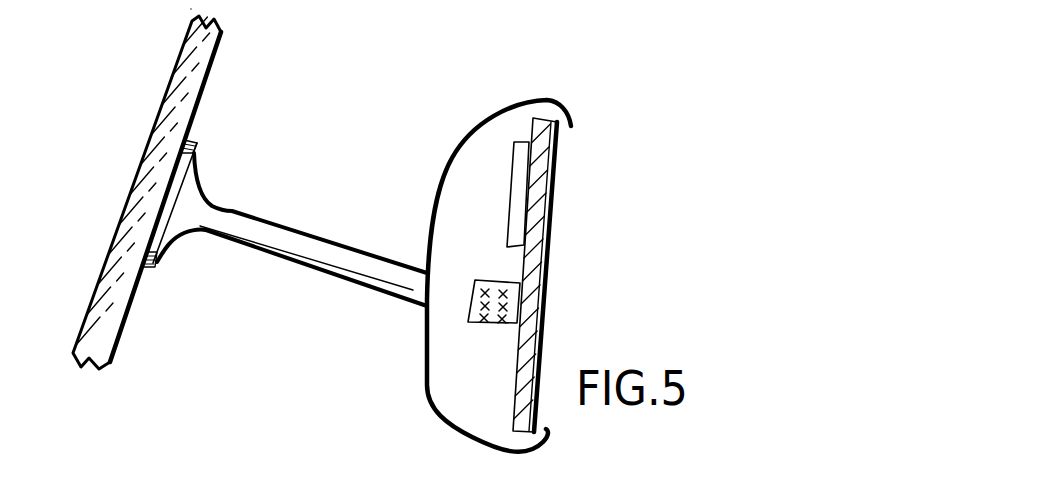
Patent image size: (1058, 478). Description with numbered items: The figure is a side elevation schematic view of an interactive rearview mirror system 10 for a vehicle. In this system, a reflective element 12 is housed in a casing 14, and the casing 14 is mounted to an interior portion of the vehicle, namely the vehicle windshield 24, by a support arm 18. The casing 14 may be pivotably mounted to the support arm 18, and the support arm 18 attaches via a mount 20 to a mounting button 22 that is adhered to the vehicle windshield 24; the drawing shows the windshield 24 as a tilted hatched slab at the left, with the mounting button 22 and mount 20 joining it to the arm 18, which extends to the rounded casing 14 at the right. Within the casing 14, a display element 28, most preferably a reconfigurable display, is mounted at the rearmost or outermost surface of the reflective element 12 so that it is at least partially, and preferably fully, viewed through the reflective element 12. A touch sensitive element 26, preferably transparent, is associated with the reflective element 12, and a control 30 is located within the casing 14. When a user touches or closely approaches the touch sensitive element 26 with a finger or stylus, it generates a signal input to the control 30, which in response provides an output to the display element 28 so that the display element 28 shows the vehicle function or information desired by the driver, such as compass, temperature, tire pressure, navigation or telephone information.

The interactive rearview mirror system 10 is at (369, 63).
The reflective element 12 is at (543, 120).
The casing 14 is at (462, 141).
The support arm 18 is at (297, 247).
The mount 20 is at (183, 220).
The mounting button 22 is at (195, 143).
The vehicle windshield 24 is at (160, 135).
The touch sensitive element 26 is at (548, 251).
The display element 28 is at (520, 205).
The control 30 is at (510, 308).